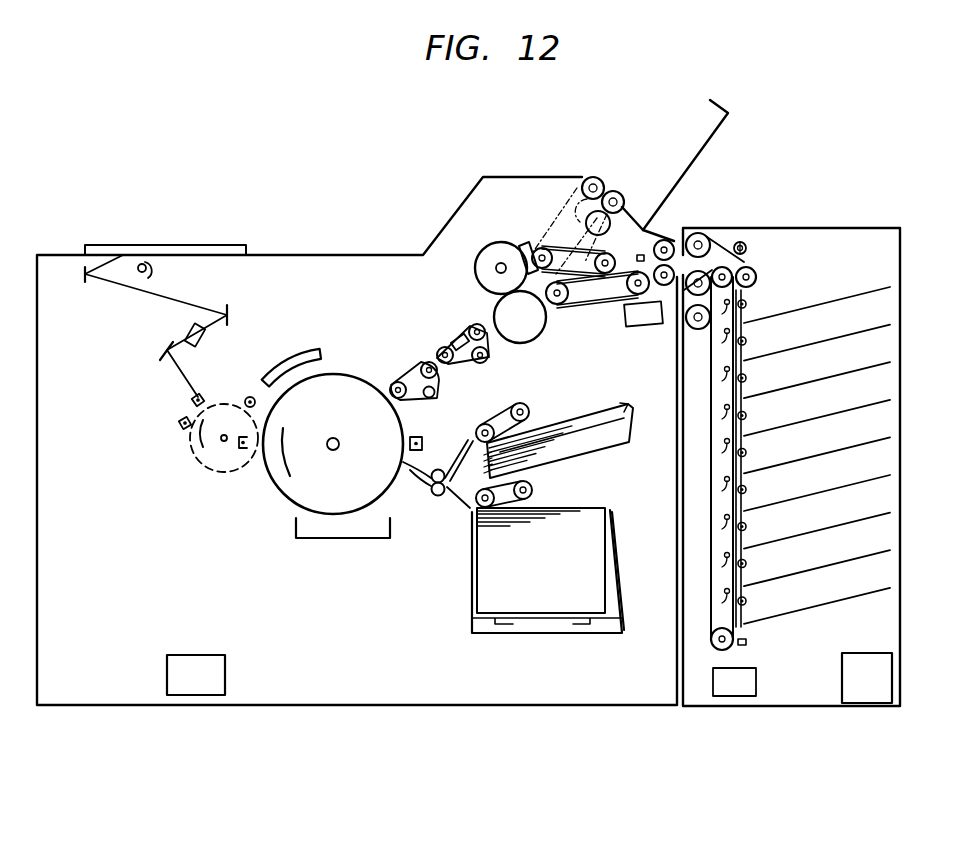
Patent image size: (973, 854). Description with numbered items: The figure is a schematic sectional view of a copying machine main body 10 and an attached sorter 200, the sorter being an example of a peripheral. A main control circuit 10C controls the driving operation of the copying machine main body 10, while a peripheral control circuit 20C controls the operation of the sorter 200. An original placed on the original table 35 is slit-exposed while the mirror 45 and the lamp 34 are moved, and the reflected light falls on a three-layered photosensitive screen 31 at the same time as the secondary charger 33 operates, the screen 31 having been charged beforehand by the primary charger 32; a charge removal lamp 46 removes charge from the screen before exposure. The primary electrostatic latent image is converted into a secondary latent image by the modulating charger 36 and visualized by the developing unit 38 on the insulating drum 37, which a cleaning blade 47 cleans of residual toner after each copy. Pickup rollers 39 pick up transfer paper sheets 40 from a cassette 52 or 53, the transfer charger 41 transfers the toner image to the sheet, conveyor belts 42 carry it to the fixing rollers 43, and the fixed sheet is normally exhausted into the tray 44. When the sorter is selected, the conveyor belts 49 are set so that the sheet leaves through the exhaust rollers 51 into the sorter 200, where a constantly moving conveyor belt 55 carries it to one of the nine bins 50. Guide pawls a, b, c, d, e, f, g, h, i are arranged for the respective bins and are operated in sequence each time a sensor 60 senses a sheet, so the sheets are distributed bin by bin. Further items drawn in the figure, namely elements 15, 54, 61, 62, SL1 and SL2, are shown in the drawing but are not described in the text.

The copying machine main body 10 is at (363, 255).
The main control circuit 10C is at (213, 654).
The mirror 15 is at (232, 317).
The peripheral control circuit 20C is at (842, 656).
The photosensitive screen 31 is at (227, 474).
The primary charger 32 is at (180, 422).
The secondary charger 33 is at (202, 393).
The lamp 34 is at (150, 273).
The original table 35 is at (208, 244).
The modulating charger 36 is at (240, 452).
The insulating drum 37 is at (280, 480).
The developing unit 38 is at (336, 540).
The pickup rollers 39 is at (487, 422).
The transfer paper sheets 40 is at (558, 443).
The transfer charger 41 is at (416, 436).
The conveyor belts 42 is at (438, 383).
The fixing rollers 43 is at (498, 243).
The tray 44 is at (690, 162).
The mirror 45 is at (85, 285).
The charge removal lamp 46 is at (248, 395).
The cleaning blade 47 is at (310, 347).
The conveyor belts 49 is at (583, 310).
The bins 50 is at (597, 178).
The exhaust rollers 51 is at (668, 240).
The cassette 52 is at (598, 450).
The cassette 53 is at (620, 534).
The sorter inlet rollers 54 is at (720, 242).
The conveyor belt 55 is at (684, 314).
The sensor 60 is at (639, 256).
The paper sensor 61 is at (748, 249).
The paper sensor 62 is at (747, 642).
The sorter 200 is at (950, 306).
The solenoid SL1 is at (643, 313).
The solenoid SL2 is at (734, 682).
The guide pawl a is at (723, 310).
The guide pawl b is at (723, 339).
The guide pawl c is at (723, 377).
The guide pawl d is at (723, 415).
The guide pawl e is at (723, 449).
The guide pawl f is at (723, 487).
The guide pawl g is at (723, 525).
The guide pawl h is at (723, 563).
The guide pawl i is at (723, 599).